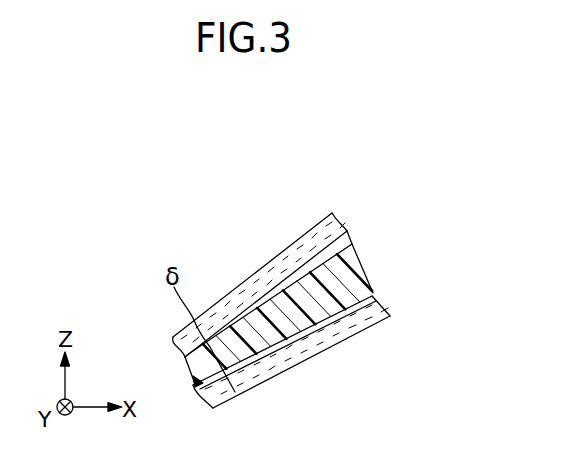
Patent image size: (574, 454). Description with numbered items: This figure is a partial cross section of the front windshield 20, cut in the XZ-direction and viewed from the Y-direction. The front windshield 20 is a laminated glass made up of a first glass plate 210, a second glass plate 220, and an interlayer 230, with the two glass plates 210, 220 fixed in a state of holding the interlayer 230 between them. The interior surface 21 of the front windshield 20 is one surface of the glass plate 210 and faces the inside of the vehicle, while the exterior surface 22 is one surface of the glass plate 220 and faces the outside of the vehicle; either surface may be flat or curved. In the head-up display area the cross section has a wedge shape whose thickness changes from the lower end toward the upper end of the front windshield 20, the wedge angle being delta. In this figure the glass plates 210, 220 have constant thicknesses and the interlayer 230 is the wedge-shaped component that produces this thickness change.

The front windshield 20 is at (345, 193).
The exterior surface 22 is at (269, 262).
The glass plate 220 is at (349, 222).
The interlayer 230 is at (347, 273).
The glass plate 210 is at (376, 300).
The interior surface 21 is at (334, 343).